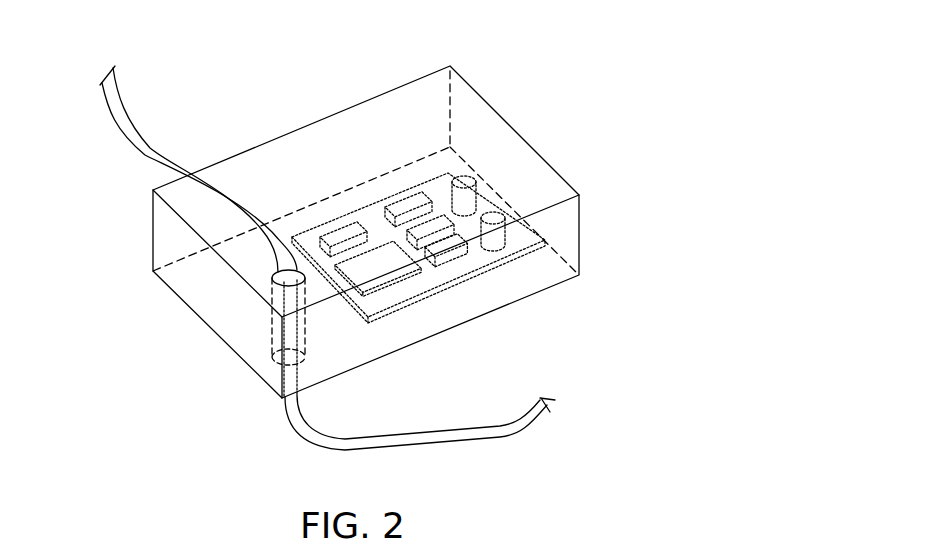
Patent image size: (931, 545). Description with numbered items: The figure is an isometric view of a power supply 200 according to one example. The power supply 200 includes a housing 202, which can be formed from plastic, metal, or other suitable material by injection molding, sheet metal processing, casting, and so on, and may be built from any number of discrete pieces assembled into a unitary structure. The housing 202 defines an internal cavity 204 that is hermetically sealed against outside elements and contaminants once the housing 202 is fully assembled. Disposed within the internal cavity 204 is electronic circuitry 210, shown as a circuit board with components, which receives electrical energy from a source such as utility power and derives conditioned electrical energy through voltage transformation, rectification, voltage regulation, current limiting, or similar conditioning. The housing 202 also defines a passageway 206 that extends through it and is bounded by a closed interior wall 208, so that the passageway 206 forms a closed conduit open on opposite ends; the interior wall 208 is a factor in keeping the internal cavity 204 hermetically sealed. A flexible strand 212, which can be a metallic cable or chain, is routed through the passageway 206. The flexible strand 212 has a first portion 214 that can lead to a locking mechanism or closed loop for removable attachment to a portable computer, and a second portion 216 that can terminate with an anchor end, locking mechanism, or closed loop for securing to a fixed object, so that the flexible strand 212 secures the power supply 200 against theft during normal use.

The power supply 200 is at (528, 43).
The housing 202 is at (513, 127).
The internal cavity 204 is at (320, 149).
The passageway 206 is at (273, 322).
The interior wall 208 is at (282, 270).
The electronic circuitry 210 is at (460, 290).
The flexible strand 212 is at (385, 443).
The first portion 214 is at (97, 91).
The second portion 216 is at (548, 418).